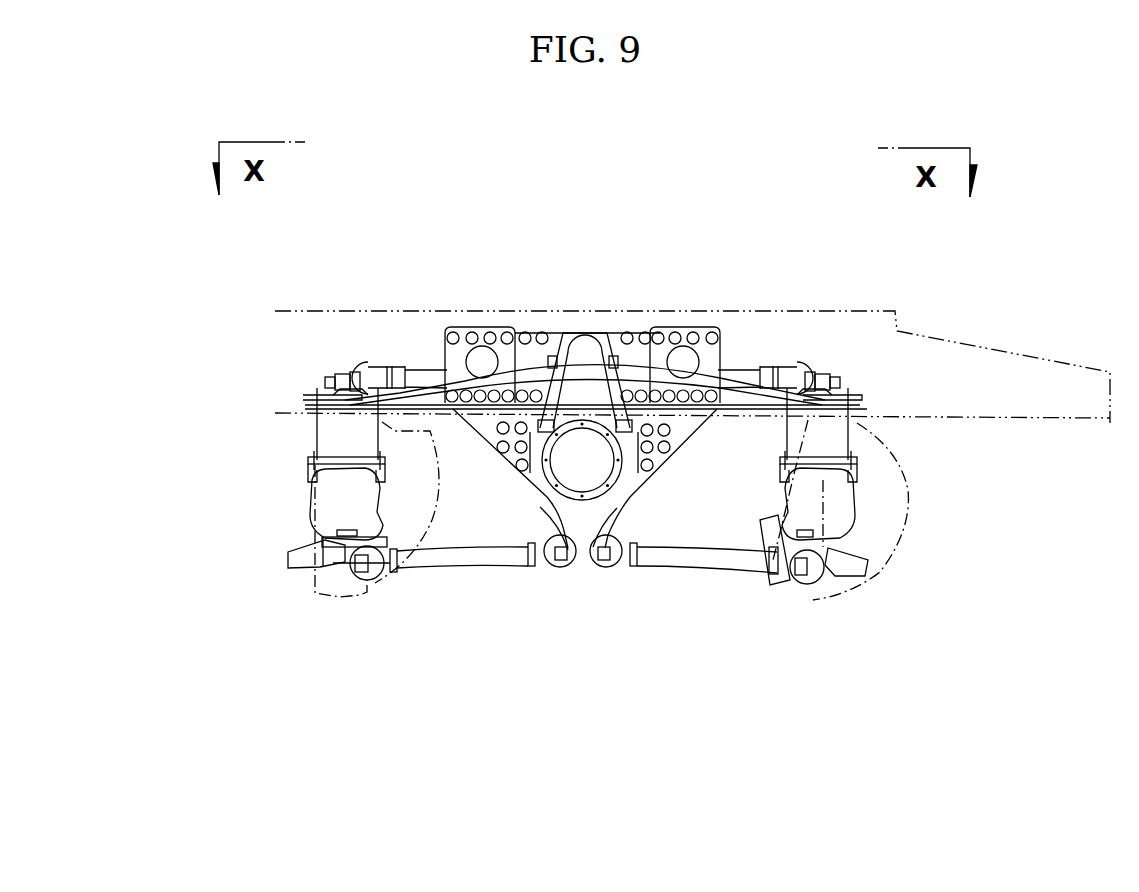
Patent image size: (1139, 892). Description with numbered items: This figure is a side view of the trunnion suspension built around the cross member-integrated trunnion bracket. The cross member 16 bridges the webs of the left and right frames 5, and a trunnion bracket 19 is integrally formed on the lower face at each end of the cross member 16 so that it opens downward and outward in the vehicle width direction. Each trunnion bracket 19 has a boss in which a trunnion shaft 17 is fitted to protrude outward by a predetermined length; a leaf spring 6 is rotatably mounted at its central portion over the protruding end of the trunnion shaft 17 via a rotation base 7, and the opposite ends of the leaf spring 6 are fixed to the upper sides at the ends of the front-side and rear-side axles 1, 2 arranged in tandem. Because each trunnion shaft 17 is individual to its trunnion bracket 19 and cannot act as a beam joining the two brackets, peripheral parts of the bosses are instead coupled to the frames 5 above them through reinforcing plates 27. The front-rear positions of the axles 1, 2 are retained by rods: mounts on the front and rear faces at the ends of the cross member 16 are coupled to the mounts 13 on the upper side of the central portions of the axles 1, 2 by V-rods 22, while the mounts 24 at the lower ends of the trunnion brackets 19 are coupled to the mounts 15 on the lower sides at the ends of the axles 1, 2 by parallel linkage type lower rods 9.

The axle 1 is at (313, 497).
The axle 2 is at (782, 495).
The frame 5 is at (1033, 360).
The leaf spring 6 is at (632, 373).
The rotation base 7 is at (540, 433).
The lower rod 9 is at (463, 557).
The mount 13 is at (338, 378).
The mount 15 is at (343, 572).
The cross member 16 is at (593, 325).
The trunnion shaft 17 is at (573, 462).
The trunnion bracket 19 is at (624, 516).
The V-rod 22 is at (413, 368).
The mount 24 is at (573, 560).
The reinforcing plate 27 is at (443, 347).